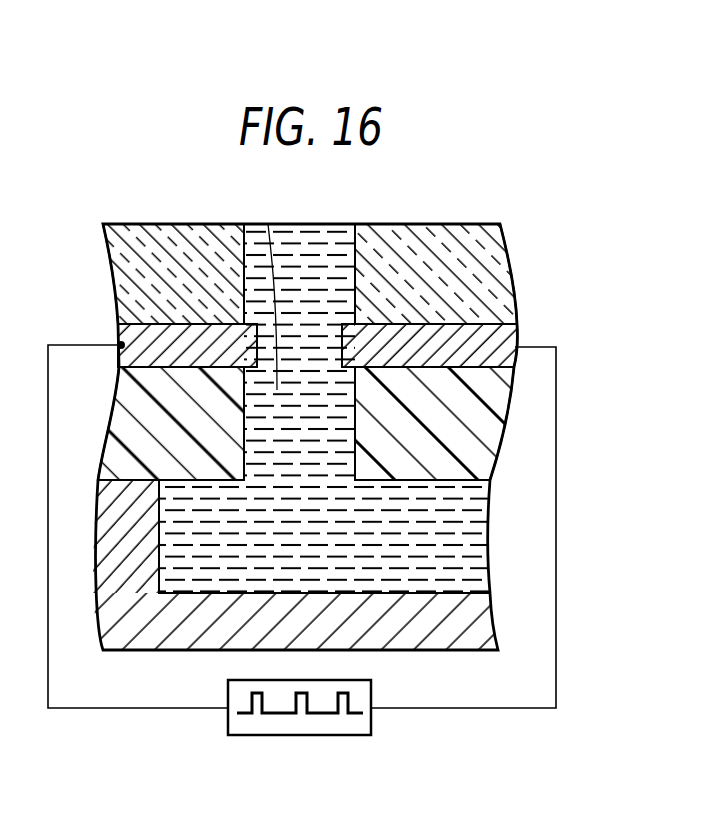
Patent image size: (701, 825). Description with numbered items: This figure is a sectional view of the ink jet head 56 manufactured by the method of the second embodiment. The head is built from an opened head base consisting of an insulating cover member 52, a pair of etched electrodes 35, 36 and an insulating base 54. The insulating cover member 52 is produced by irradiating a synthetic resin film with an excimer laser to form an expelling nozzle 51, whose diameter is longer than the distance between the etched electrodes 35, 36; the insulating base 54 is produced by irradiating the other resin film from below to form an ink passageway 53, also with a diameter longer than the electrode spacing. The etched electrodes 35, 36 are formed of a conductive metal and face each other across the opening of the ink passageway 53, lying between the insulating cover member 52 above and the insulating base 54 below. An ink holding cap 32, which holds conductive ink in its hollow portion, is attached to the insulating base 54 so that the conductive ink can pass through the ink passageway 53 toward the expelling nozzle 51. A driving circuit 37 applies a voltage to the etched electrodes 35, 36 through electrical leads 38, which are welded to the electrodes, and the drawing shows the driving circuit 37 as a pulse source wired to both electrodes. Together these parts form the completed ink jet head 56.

The ink holding cap 32 is at (490, 615).
The etched electrode 35 is at (118, 332).
The etched electrode 36 is at (517, 326).
The driving circuit 37 is at (370, 727).
The electrical leads 38 is at (556, 537).
The expelling nozzle 51 is at (324, 236).
The insulating cover member 52 is at (517, 266).
The ink passageway 53 is at (268, 224).
The insulating base 54 is at (488, 458).
The ink jet head 56 is at (543, 228).